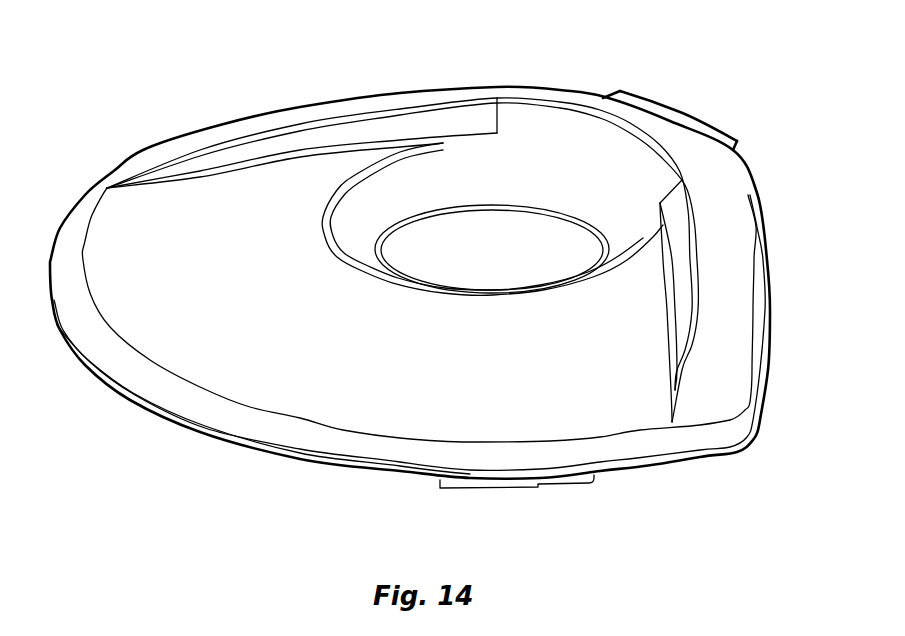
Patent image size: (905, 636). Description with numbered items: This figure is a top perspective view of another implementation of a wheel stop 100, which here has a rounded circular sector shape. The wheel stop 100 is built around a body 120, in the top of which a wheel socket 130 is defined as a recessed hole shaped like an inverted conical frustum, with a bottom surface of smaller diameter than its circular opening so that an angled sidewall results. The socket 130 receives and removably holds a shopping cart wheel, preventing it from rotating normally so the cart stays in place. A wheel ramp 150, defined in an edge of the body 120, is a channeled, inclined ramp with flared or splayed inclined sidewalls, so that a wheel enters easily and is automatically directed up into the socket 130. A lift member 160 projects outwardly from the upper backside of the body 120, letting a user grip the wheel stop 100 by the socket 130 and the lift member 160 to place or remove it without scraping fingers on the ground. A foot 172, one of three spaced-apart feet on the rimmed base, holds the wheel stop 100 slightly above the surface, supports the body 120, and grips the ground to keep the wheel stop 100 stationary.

The wheel stop 100 is at (178, 85).
The body 120 is at (728, 272).
The wheel socket 130 is at (538, 172).
The wheel ramp 150 is at (287, 360).
The lift member 160 is at (682, 118).
The foot 172 is at (543, 474).